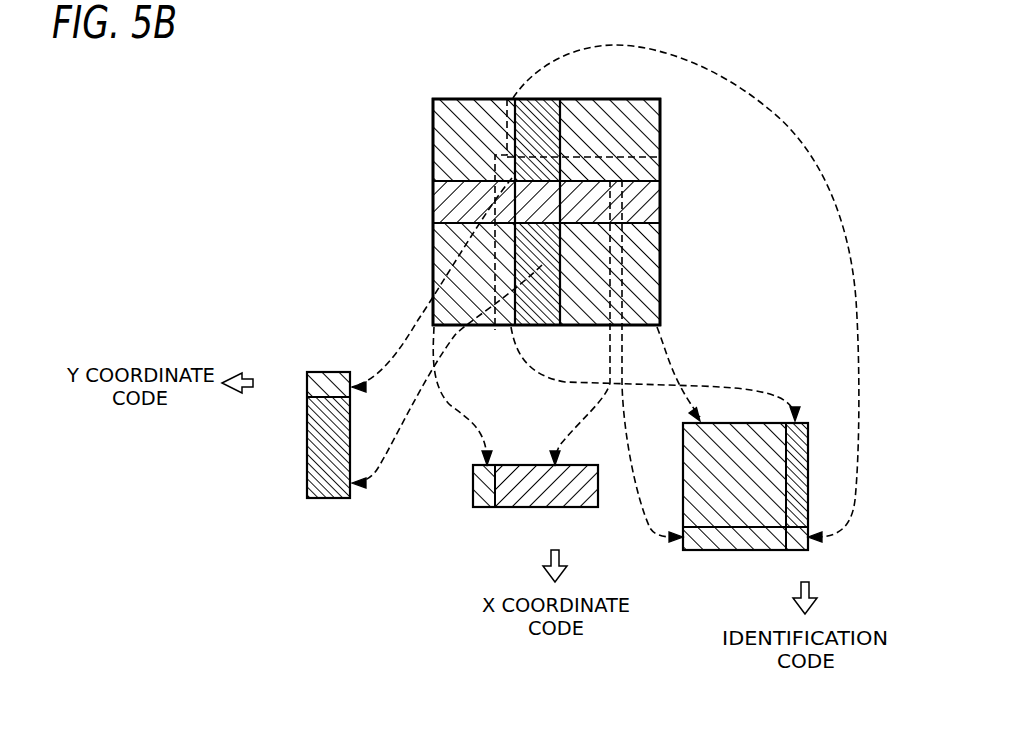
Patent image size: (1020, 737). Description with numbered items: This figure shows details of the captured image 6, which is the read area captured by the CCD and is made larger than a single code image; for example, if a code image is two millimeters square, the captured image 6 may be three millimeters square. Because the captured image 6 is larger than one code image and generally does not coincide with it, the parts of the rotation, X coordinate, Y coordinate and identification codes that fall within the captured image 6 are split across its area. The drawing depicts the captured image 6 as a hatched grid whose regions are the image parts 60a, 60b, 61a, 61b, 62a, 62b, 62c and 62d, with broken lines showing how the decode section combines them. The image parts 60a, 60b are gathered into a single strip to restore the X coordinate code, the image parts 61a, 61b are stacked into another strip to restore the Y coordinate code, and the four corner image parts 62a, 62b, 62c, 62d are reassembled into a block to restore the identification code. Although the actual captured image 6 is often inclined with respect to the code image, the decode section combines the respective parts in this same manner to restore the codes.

The captured image 6 is at (453, 98).
The image part 60a is at (465, 168).
The image part 60b is at (652, 215).
The image part 61a is at (535, 162).
The image part 61b is at (542, 312).
The image part 62a is at (653, 300).
The image part 62b is at (512, 318).
The image part 62c is at (653, 167).
The image part 62d is at (463, 126).